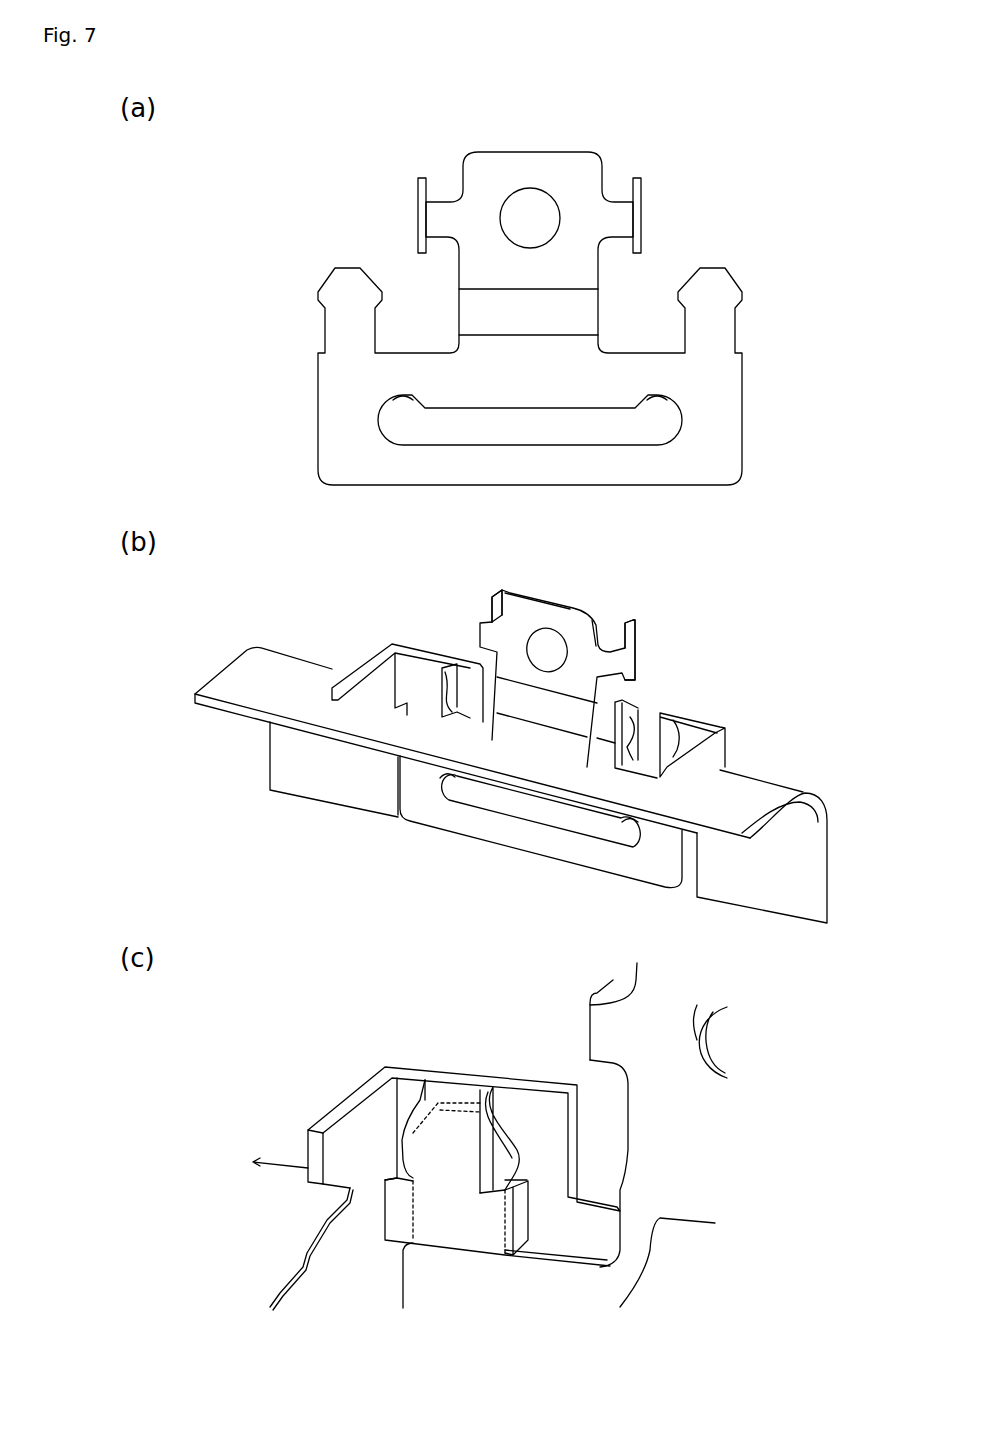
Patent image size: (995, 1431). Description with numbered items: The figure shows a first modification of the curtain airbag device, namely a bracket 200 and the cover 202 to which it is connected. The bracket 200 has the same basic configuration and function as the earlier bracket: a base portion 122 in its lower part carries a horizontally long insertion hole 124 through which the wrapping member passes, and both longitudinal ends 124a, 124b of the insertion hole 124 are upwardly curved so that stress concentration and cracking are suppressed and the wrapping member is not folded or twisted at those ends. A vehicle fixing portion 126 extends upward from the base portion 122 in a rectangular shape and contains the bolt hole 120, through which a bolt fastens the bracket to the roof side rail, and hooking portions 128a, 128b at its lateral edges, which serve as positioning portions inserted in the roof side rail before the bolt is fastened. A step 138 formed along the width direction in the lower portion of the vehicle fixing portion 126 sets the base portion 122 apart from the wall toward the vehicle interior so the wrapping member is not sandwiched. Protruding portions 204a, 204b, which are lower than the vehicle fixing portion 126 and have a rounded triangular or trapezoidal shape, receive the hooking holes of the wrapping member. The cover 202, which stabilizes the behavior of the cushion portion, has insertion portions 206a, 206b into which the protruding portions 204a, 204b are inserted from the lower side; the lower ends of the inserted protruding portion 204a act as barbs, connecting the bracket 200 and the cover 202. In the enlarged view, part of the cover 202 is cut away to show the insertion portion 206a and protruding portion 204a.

The bracket 200 is at (560, 711).
The base portion 122 is at (740, 447).
The vehicle fixing portion 126 is at (578, 165).
The bolt hole 120 is at (535, 195).
The hooking portion 128a is at (422, 180).
The hooking portion 128b is at (641, 180).
The step 138 is at (527, 318).
The insertion hole 124 is at (538, 445).
The end of insertion hole 124a is at (398, 400).
The end of insertion hole 124b is at (665, 400).
The protruding portion 204a is at (338, 268).
The protruding portion 204b is at (713, 283).
The cover 202 is at (262, 648).
The insertion portion 206a is at (418, 678).
The insertion portion 206b is at (660, 733).